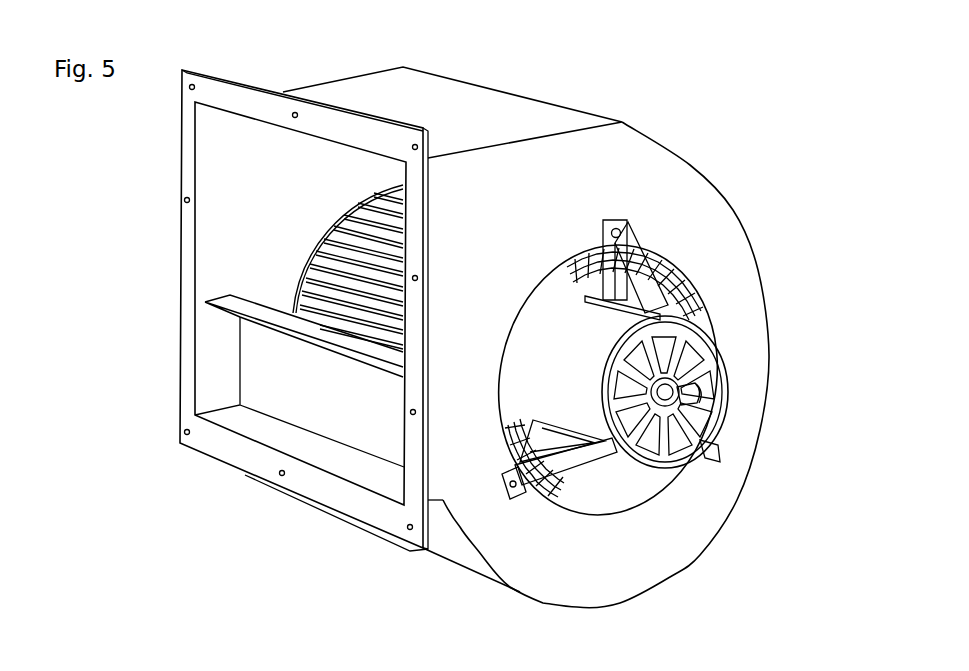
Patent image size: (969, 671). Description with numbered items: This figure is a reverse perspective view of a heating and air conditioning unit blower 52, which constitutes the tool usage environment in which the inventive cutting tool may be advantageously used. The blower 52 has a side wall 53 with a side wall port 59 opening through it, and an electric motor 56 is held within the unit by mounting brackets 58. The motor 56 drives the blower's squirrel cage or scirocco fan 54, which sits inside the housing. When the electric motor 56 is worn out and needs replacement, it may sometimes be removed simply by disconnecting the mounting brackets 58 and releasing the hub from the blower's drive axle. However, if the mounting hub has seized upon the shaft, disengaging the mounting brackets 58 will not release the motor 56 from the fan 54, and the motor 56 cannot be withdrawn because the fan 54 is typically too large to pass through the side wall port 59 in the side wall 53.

The heating and air conditioning unit blower 52 is at (536, 78).
The side wall 53 is at (652, 172).
The squirrel cage or scirocco fan 54 is at (307, 280).
The electric motor 56 is at (705, 383).
The mounting brackets 58 is at (650, 273).
The side wall port 59 is at (640, 487).